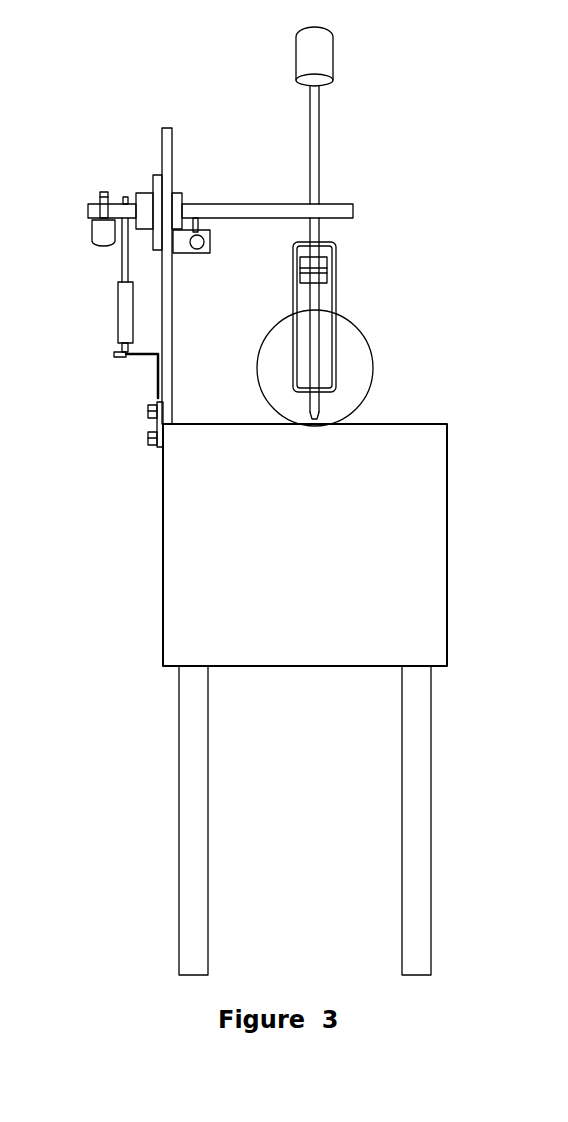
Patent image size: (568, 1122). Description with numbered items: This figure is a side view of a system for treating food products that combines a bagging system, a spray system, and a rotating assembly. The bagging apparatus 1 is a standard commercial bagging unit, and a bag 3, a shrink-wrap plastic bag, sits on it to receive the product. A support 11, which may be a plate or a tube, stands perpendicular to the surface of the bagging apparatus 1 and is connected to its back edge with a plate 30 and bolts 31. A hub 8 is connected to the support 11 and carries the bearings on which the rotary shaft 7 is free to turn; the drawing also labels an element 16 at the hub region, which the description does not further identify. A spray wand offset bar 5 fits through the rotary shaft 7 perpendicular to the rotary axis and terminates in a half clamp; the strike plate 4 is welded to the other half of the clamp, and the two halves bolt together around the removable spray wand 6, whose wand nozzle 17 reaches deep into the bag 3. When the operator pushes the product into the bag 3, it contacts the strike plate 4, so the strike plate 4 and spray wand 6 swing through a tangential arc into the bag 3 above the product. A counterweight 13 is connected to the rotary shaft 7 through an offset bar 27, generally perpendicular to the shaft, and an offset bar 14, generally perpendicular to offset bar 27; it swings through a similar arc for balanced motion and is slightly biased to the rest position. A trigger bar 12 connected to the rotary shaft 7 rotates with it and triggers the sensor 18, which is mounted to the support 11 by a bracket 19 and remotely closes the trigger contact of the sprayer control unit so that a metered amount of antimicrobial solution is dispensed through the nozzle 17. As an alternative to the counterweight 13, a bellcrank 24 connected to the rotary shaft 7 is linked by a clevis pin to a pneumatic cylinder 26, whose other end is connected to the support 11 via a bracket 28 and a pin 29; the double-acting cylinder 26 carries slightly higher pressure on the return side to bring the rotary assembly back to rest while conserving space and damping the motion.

The bagging apparatus 1 is at (447, 458).
The bag 3 is at (373, 355).
The strike plate 4 is at (336, 292).
The spray wand offset bar 5 is at (320, 228).
The spray wand 6 is at (320, 145).
The rotary shaft 7 is at (353, 212).
The hub 8 is at (152, 245).
The support 11 is at (167, 128).
The trigger bar 12 is at (197, 220).
The counterweight 13 is at (92, 242).
The offset bar 14 is at (88, 210).
The slide block 16 is at (182, 194).
The wand nozzle 17 is at (314, 421).
The sensor 18 is at (210, 243).
The bracket 19 is at (183, 255).
The bellcrank 24 is at (126, 197).
The pneumatic cylinder 26 is at (118, 318).
The offset bar 27 is at (104, 192).
The bracket 28 is at (172, 372).
The pin 29 is at (114, 356).
The plate 30 is at (156, 425).
The bolts 31 is at (148, 410).